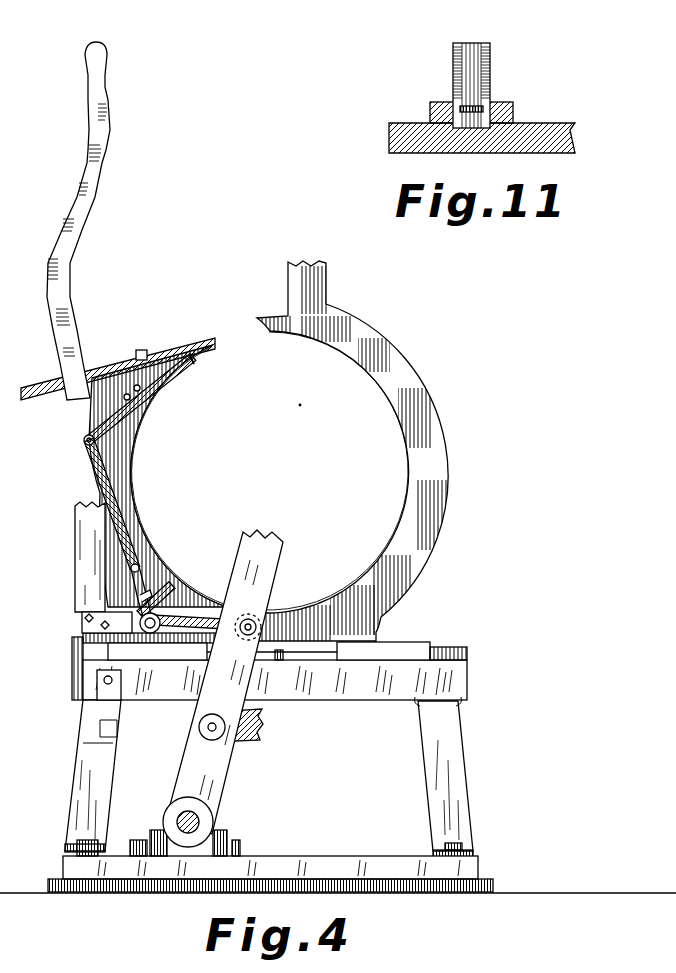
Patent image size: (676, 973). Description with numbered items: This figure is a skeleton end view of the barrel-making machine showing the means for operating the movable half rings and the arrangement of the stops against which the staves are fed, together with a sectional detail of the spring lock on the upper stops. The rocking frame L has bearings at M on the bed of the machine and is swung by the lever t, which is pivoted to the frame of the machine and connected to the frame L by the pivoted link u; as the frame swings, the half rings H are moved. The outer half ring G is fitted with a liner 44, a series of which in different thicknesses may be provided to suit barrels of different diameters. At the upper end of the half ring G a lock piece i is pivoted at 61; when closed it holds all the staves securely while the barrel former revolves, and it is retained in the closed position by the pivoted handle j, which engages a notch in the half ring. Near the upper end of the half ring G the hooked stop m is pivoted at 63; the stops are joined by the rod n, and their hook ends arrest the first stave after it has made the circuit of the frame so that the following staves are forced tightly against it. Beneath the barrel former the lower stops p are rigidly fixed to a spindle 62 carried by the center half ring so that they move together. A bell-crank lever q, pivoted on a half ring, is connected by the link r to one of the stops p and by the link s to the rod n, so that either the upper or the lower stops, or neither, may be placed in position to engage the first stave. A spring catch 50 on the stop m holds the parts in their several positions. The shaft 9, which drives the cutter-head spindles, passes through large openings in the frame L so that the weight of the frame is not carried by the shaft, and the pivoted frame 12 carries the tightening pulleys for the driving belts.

In FIG. 4, the half ring H is at (450, 452).
In FIG. 4, the pivot of the stops 63 is at (279, 406).
In FIG. 4, the half ring G is at (123, 453).
In FIG. 11, the half ring G is at (557, 125).
In FIG. 4, the liner 44 is at (135, 492).
In FIG. 4, the lever t is at (68, 264).
In FIG. 4, the bearings M is at (232, 833).
In FIG. 4, the lock piece i is at (170, 345).
In FIG. 4, the pivot of the lock pieces 61 is at (142, 350).
In FIG. 4, the pivoted handle j is at (64, 382).
In FIG. 4, the stop m is at (168, 378).
In FIG. 11, the stop m is at (503, 105).
In FIG. 4, the spring catch 50 is at (135, 396).
In FIG. 11, the spring catch 50 is at (453, 63).
In FIG. 4, the rod n is at (62, 442).
In FIG. 4, the link s is at (97, 483).
In FIG. 4, the link r is at (133, 593).
In FIG. 4, the bell-crank lever q is at (137, 585).
In FIG. 4, the pivoted link u is at (183, 637).
In FIG. 4, the stop p is at (177, 627).
In FIG. 4, the pivoted frame 12 is at (258, 715).
In FIG. 4, the rocking frame L is at (285, 555).
In FIG. 4, the spindle 62 is at (255, 620).
In FIG. 4, the shaft 9 is at (178, 817).